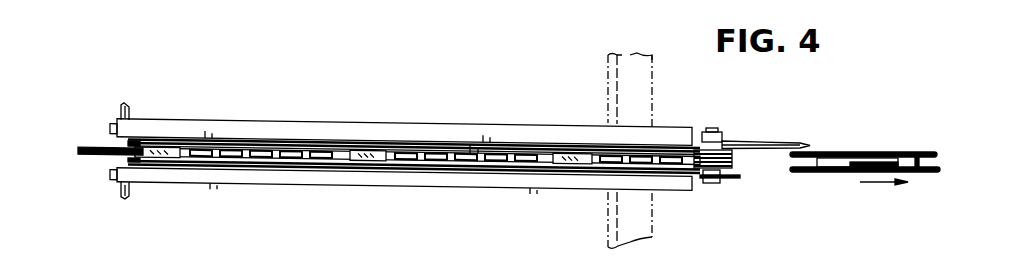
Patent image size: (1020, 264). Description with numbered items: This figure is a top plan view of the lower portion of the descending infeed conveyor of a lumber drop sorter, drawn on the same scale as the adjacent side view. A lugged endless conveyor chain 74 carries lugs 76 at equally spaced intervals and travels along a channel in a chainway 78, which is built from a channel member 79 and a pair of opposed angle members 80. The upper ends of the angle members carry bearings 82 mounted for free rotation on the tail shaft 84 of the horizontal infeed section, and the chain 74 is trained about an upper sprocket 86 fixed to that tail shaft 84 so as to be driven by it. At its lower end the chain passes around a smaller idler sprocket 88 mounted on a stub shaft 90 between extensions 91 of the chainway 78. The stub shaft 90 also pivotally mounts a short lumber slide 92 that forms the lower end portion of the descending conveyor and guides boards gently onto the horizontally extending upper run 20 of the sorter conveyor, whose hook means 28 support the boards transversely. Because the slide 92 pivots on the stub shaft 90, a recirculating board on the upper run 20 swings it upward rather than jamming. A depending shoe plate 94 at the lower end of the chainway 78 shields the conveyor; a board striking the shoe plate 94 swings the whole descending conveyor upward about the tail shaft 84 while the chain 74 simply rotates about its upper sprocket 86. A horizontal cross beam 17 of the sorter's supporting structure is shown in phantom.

The horizontal cross beam 17 is at (655, 77).
The upper run 20 is at (904, 152).
The lumber-supporting hook means 28 is at (853, 155).
The endless conveyor chain 74 is at (150, 148).
The lug 76 is at (358, 152).
The chainway 78 is at (523, 114).
The channel member 79 is at (486, 136).
The angle member 80 is at (565, 130).
The bearing 82 is at (110, 130).
The tail shaft 84 is at (120, 112).
The upper sprocket 86 is at (82, 152).
The idler sprocket 88 is at (733, 160).
The stub shaft 90 is at (707, 130).
The extension 91 is at (702, 187).
The lumber slide 92 is at (752, 142).
The shoe plate 94 is at (733, 183).